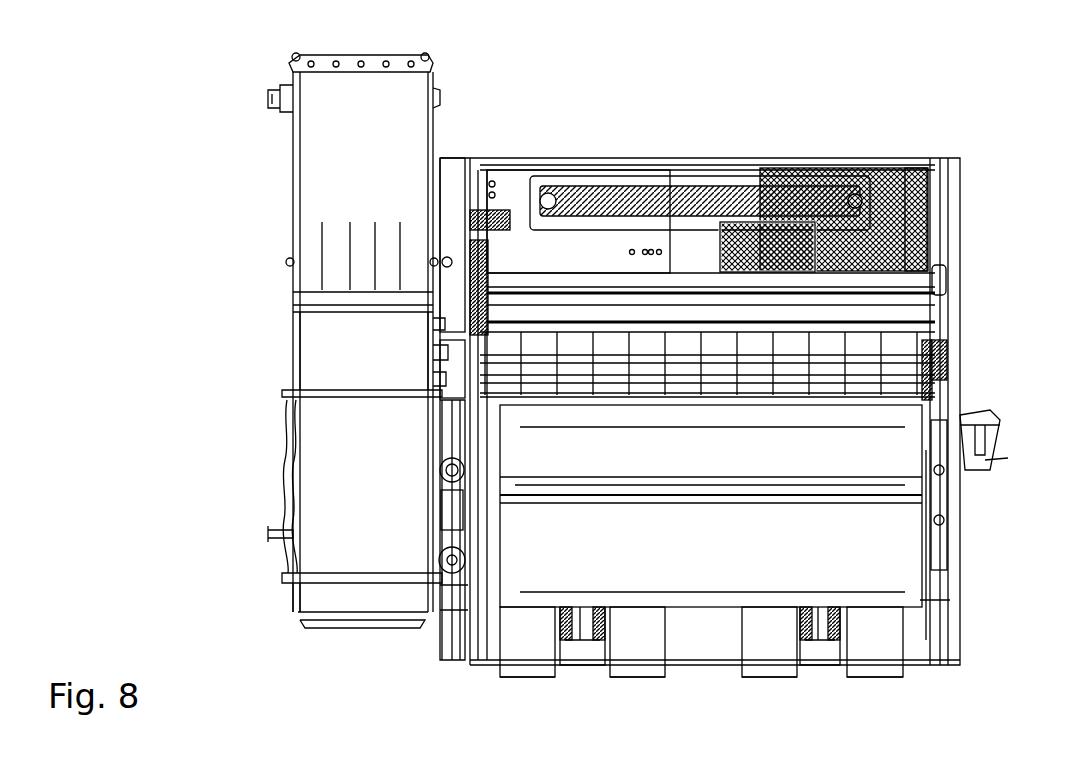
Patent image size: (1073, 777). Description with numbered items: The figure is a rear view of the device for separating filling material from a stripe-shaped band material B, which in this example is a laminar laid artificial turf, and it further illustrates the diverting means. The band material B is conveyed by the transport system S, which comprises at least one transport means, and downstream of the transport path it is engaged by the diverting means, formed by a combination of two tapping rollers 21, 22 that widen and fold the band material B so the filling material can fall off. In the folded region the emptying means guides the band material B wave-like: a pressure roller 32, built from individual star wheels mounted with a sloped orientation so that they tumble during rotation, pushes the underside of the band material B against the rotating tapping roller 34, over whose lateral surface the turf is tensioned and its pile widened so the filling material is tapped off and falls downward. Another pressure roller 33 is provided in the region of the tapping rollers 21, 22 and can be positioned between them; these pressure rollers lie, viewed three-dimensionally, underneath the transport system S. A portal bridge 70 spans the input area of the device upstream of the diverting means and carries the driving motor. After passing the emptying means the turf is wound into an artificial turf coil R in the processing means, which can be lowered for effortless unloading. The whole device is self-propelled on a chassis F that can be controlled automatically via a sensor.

The portal bridge 70 is at (904, 131).
The tapping roller 21 is at (836, 322).
The tapping roller 22 is at (895, 303).
The pressure roller 32 is at (902, 356).
The pressure roller 33 is at (925, 358).
The tapping roller 34 is at (918, 215).
The band material B is at (325, 172).
The transport system S is at (325, 349).
The artificial turf coil R is at (716, 565).
The chassis F is at (520, 660).